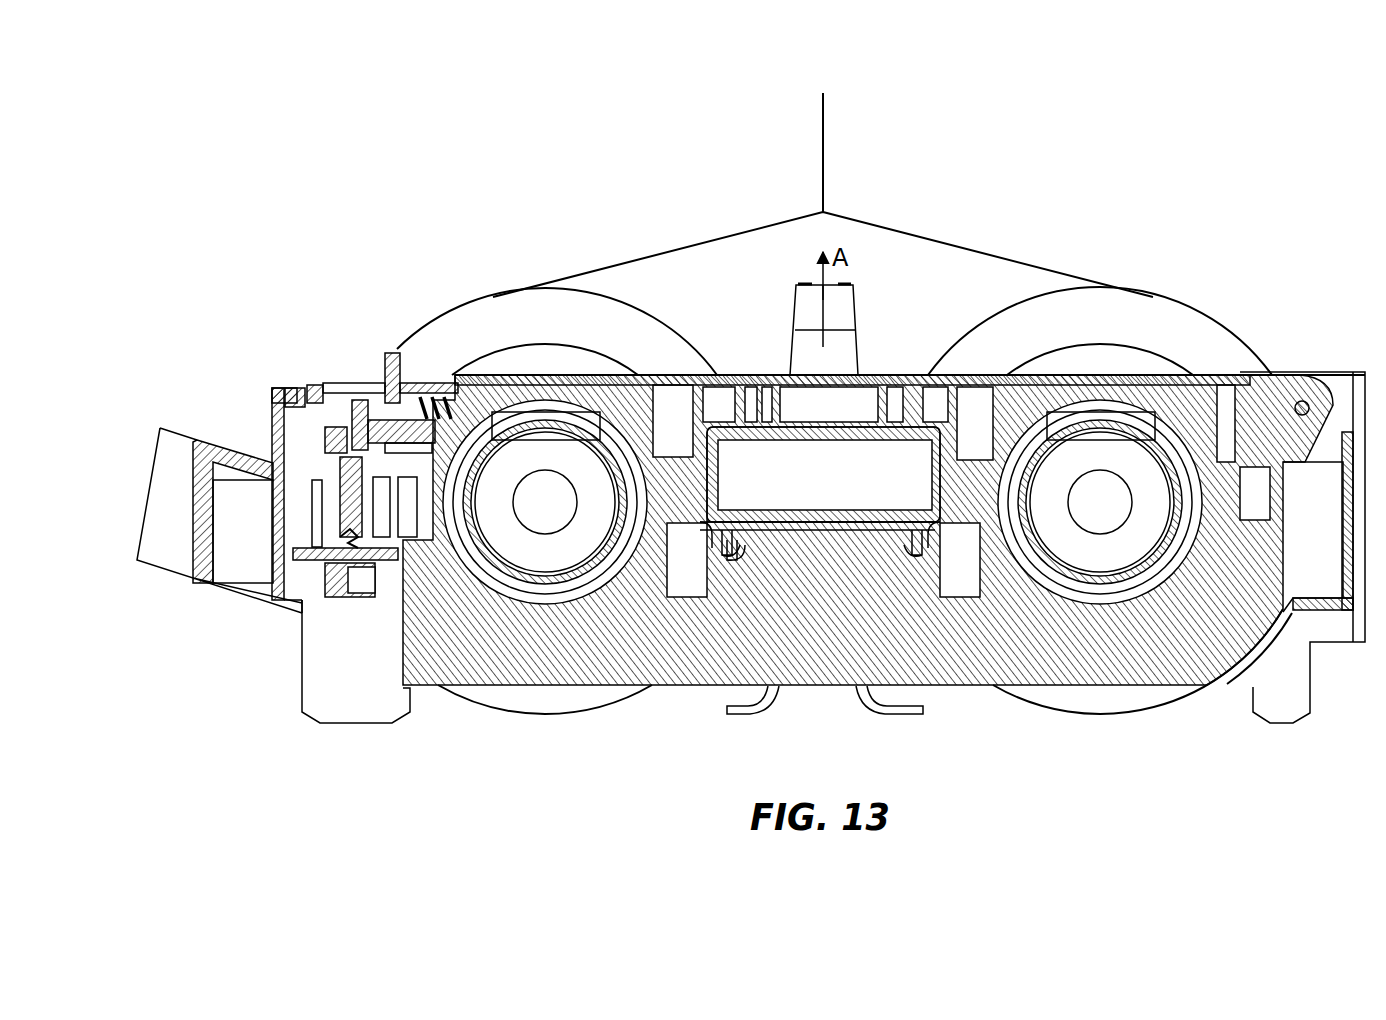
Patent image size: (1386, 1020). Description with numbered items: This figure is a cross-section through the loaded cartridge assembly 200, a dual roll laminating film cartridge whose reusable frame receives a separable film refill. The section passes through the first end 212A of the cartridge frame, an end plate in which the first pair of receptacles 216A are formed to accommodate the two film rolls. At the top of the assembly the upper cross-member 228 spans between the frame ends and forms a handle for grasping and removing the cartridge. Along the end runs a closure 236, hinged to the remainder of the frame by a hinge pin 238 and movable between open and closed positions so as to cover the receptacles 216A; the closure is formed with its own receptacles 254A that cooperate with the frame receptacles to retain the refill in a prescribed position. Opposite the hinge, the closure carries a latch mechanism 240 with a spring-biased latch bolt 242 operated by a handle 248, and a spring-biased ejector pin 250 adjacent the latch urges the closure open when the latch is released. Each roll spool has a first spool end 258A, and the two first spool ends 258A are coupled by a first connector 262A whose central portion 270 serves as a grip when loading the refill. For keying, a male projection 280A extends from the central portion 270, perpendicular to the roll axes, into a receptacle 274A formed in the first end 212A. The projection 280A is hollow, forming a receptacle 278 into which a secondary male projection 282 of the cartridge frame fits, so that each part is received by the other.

The cartridge assembly 200 is at (1250, 241).
The first end 212A is at (473, 640).
The first pair of receptacles 216A is at (1100, 565).
The upper cross-member 228 is at (197, 472).
The closure 236 is at (660, 435).
The hinge pin 238 is at (1318, 385).
The latch mechanism 240 is at (354, 368).
The latch bolt 242 is at (328, 495).
The handle 248 is at (398, 367).
The ejector pin 250 is at (272, 428).
The receptacles 254A is at (1100, 400).
The first spool end 258A is at (1128, 440).
The first connector 262A is at (719, 414).
The central portion 270 is at (788, 375).
The receptacle 274A is at (727, 548).
The receptacle 278 is at (853, 523).
The male projection 280A is at (908, 578).
The secondary male projection 282 is at (802, 540).